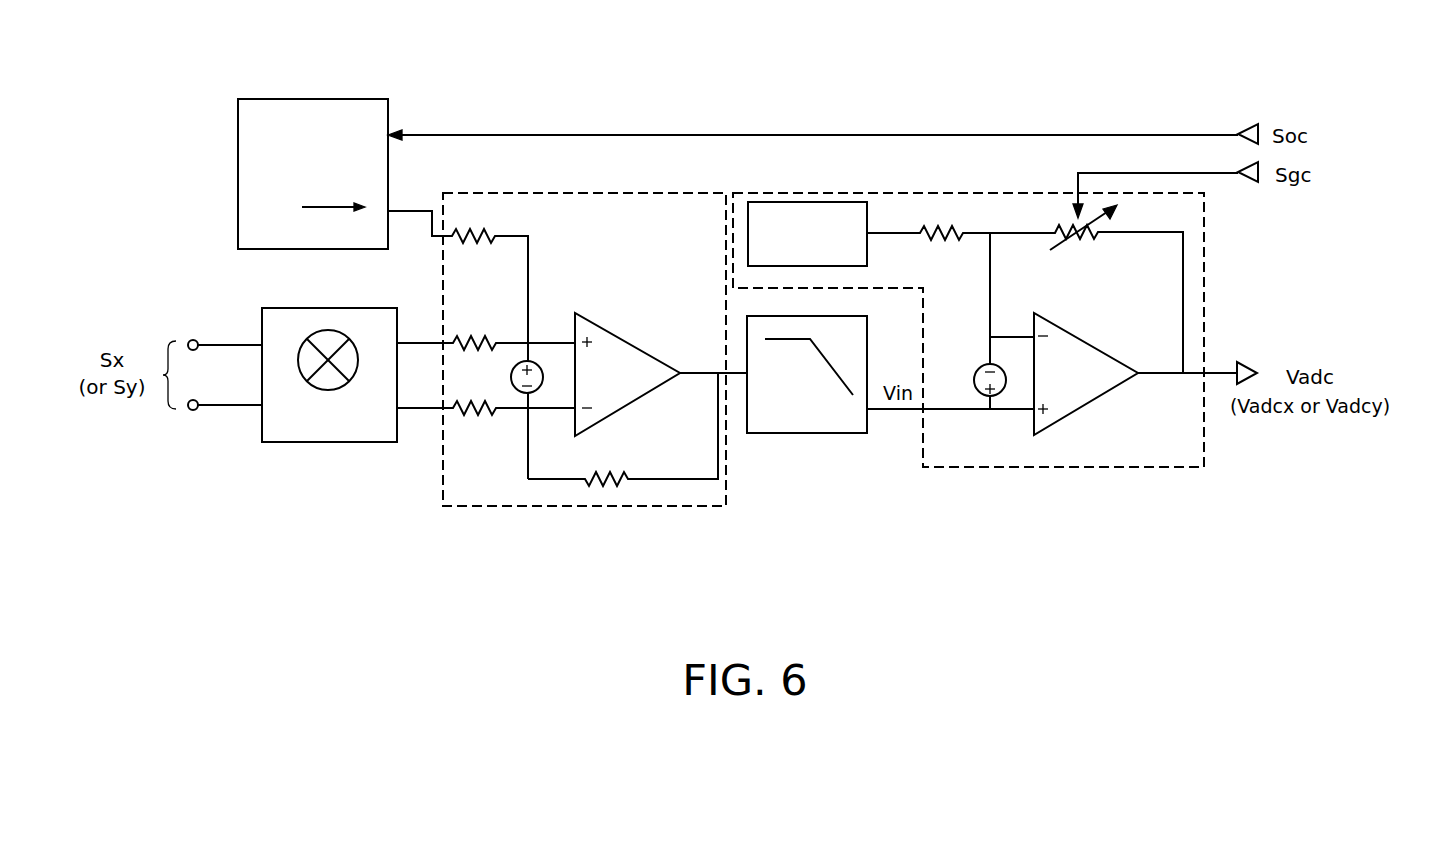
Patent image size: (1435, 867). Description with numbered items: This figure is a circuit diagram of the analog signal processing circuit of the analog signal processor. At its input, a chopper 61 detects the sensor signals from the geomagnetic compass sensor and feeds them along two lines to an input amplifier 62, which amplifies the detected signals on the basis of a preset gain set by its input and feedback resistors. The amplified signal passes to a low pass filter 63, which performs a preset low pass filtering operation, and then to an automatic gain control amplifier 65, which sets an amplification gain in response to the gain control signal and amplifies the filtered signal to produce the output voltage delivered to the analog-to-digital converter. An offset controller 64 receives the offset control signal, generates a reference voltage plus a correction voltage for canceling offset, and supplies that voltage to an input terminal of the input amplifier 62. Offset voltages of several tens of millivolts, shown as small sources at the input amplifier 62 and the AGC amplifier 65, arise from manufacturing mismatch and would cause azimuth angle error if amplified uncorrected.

The chopper 61 is at (328, 442).
The input amplifier 62 is at (600, 193).
The low pass filter 63 is at (815, 433).
The offset controller 64 is at (312, 99).
The automatic gain control (AGC) amplifier 65 is at (1020, 467).